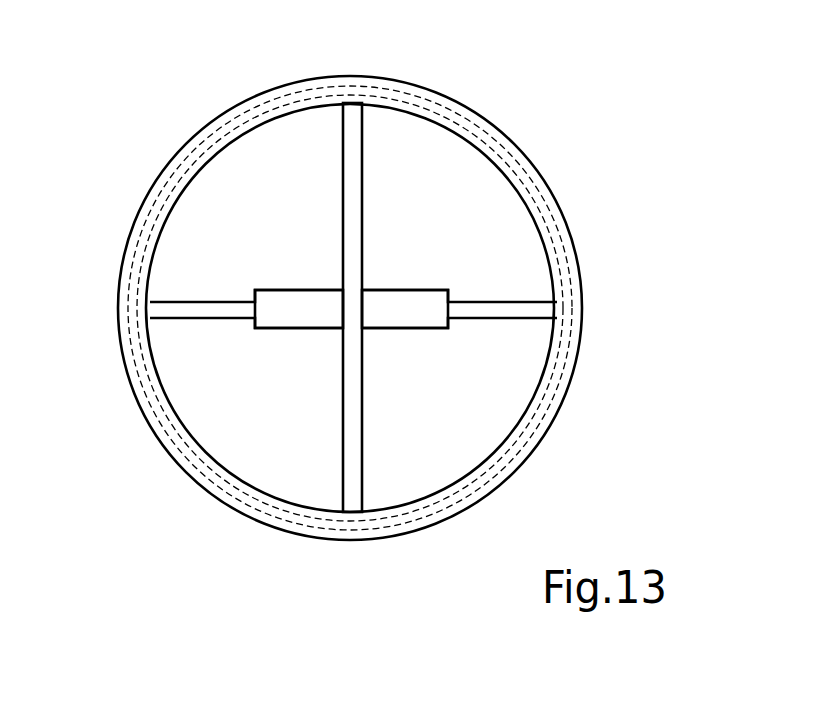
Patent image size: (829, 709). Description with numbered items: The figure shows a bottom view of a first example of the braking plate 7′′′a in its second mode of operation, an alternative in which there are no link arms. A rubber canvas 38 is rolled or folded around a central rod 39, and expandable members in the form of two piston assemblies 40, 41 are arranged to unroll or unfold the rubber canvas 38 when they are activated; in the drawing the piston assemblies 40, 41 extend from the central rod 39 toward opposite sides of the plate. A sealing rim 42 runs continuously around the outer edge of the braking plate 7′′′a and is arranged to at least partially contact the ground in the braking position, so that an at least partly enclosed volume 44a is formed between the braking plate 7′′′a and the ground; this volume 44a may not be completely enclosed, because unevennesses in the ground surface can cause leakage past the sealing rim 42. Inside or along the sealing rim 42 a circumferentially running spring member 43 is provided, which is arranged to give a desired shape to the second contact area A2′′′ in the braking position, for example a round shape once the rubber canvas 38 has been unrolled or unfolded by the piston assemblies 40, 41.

The braking plate 7′′′a is at (525, 120).
The rubber canvas 38 is at (498, 252).
The central rod 39 is at (353, 487).
The piston assembly 40 is at (304, 275).
The piston assembly 41 is at (520, 283).
The sealing rim 42 is at (180, 155).
The spring member 43 is at (376, 92).
The partly enclosed volume 44a is at (230, 380).
The second contact area A2′′′ is at (488, 398).